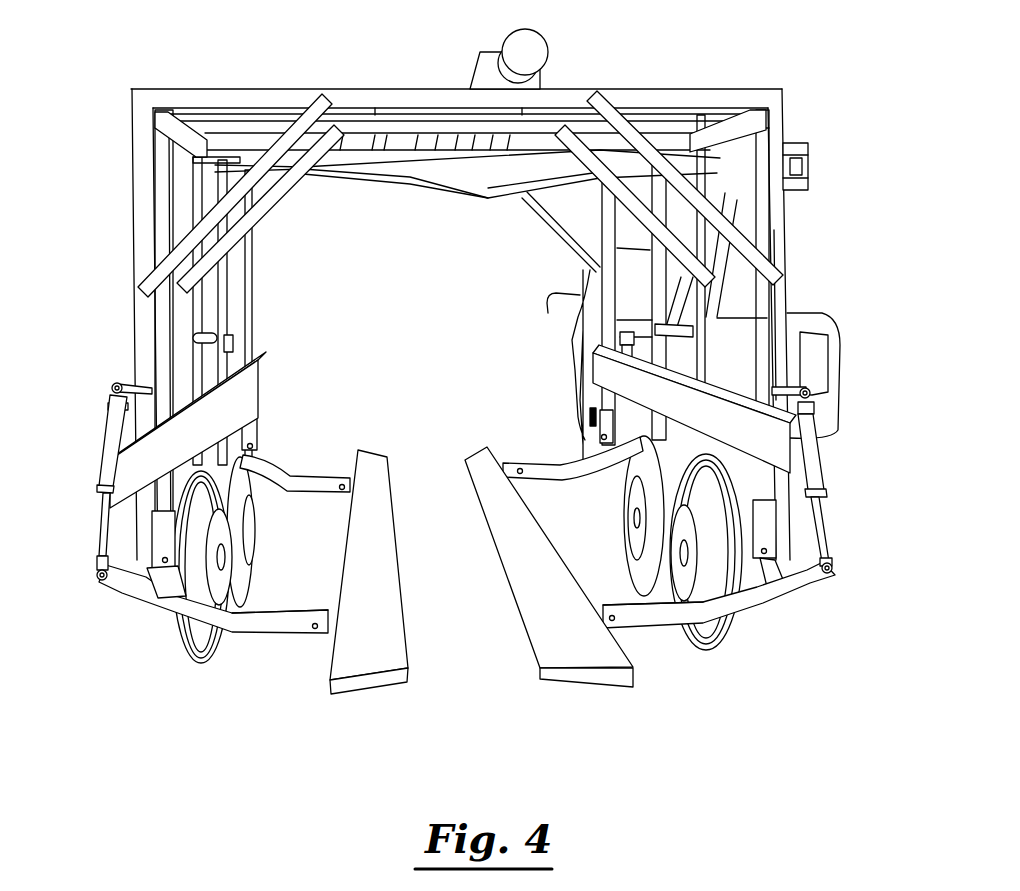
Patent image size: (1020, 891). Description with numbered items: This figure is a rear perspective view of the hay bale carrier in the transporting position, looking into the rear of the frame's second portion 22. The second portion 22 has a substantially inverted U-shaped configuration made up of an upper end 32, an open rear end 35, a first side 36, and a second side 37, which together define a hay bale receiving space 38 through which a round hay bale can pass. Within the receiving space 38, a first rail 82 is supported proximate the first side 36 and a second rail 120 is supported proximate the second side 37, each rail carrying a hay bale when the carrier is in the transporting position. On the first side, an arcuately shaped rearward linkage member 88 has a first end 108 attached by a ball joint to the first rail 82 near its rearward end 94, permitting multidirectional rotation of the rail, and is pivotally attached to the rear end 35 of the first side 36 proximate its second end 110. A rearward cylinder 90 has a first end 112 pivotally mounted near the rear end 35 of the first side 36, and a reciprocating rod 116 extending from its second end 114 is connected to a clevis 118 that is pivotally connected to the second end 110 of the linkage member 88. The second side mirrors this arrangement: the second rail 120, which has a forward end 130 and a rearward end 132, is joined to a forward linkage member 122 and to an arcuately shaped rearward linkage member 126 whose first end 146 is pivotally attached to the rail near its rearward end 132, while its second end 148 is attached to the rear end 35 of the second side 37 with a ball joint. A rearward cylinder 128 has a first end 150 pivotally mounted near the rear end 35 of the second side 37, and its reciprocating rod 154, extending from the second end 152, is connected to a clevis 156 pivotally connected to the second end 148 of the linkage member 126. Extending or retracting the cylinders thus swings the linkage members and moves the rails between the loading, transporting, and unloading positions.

The second portion 22 is at (780, 227).
The upper end 32 is at (676, 88).
The rear end 35 is at (783, 297).
The first side 36 is at (786, 256).
The second side 37 is at (128, 207).
The hay bale receiving space 38 is at (725, 426).
The first rail 82 is at (525, 638).
The rearward linkage member 88 is at (723, 642).
The rearward cylinder 90 is at (821, 447).
The rearward end 94 is at (590, 681).
The first end 108 is at (620, 640).
The second end 110 is at (797, 595).
The first end 112 is at (812, 416).
The second end 114 is at (824, 492).
The reciprocating rod 116 is at (827, 527).
The clevis 118 is at (832, 578).
The second rail 120 is at (387, 537).
The forward linkage member 122 is at (277, 467).
The rearward linkage member 126 is at (240, 628).
The rearward cylinder 128 is at (104, 446).
The forward end 130 is at (372, 450).
The rearward end 132 is at (365, 688).
The first end 146 is at (297, 632).
The second end 148 is at (133, 594).
The first end 150 is at (110, 400).
The second end 152 is at (100, 482).
The reciprocating rod 154 is at (96, 535).
The clevis 156 is at (103, 580).